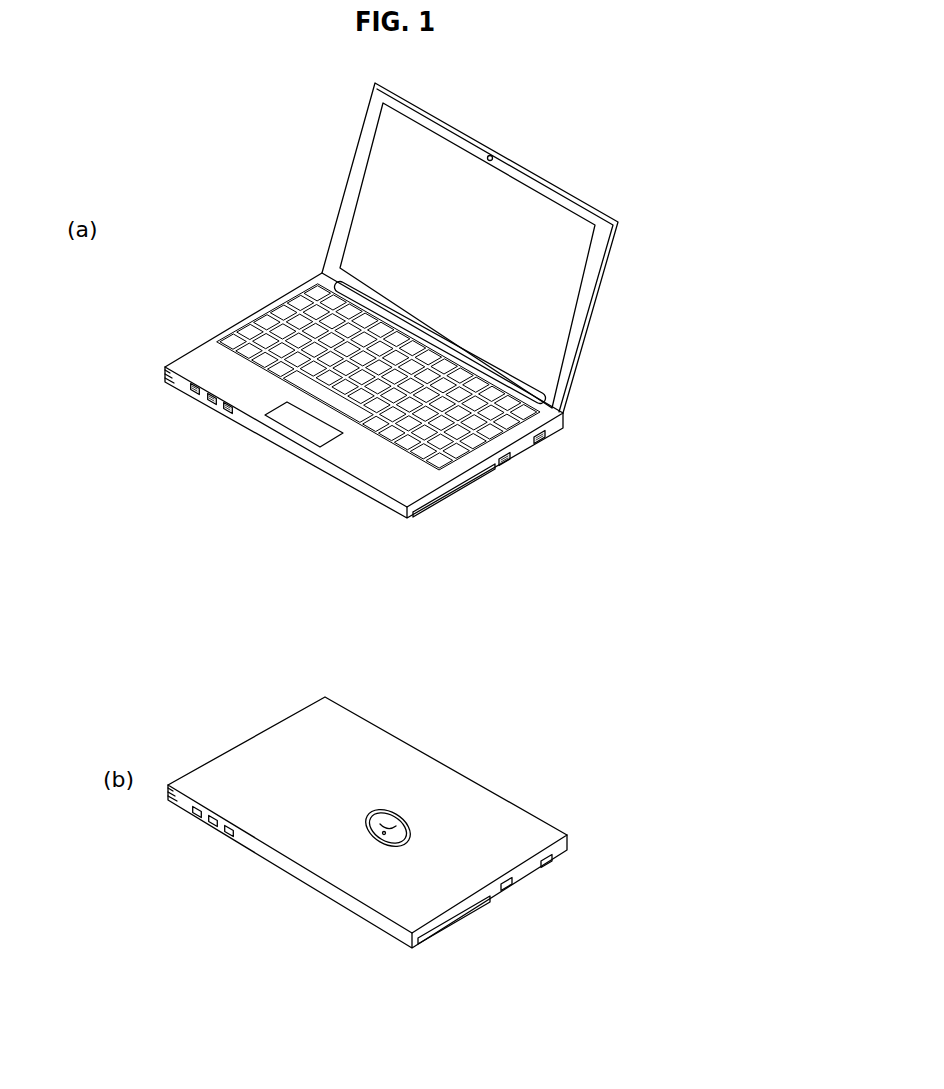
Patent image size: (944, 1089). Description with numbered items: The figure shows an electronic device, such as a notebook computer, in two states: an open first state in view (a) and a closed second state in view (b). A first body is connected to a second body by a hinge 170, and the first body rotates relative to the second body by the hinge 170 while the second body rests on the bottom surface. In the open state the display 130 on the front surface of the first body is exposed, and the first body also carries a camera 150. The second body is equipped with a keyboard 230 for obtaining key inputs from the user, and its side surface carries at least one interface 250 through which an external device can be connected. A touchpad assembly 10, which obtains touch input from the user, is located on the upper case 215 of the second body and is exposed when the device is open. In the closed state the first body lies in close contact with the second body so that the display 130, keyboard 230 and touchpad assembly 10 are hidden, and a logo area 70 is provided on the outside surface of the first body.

The display 130 is at (367, 213).
The camera 150 is at (492, 155).
The hinge 170 is at (515, 387).
The upper case 215 is at (202, 357).
The keyboard 230 is at (504, 463).
The interface 250 is at (548, 441).
The touchpad assembly 10 is at (296, 424).
The logo area 70 is at (380, 790).